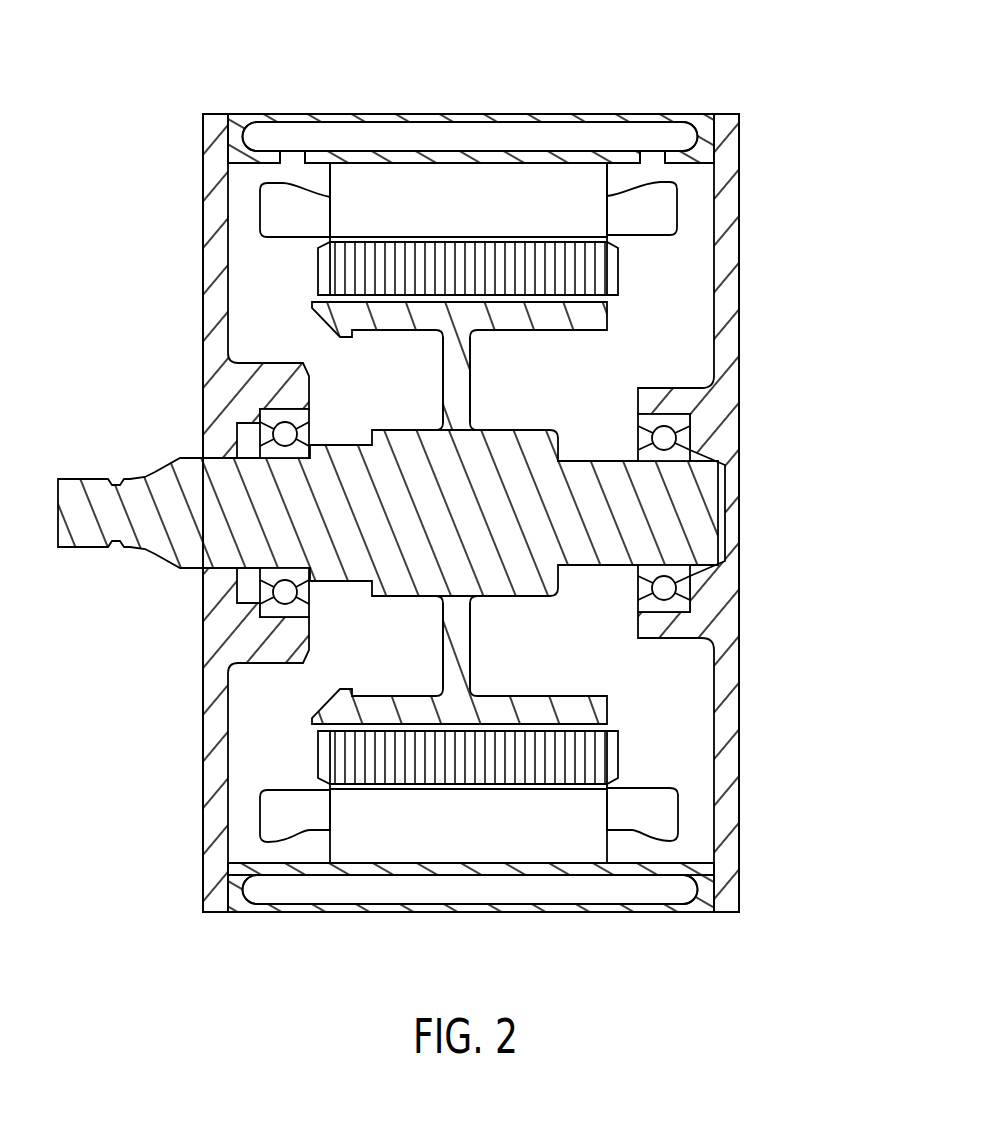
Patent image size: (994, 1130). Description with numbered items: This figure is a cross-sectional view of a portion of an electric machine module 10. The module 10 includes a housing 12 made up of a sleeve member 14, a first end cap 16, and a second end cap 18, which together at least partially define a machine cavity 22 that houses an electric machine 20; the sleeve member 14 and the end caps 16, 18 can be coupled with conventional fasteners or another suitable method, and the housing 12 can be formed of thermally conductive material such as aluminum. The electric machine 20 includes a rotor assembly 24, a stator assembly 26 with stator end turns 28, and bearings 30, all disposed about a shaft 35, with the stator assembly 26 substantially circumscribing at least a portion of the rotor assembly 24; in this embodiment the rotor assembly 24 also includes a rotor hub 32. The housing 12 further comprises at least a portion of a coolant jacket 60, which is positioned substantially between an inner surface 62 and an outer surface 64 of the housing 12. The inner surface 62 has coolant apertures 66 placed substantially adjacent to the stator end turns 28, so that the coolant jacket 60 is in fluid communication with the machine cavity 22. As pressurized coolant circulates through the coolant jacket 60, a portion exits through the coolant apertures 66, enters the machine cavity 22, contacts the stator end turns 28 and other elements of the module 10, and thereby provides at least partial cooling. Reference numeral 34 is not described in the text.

The electric machine module 10 is at (725, 40).
The housing 12 is at (250, 113).
The sleeve member 14 is at (442, 113).
The first end cap 16 is at (730, 127).
The second end cap 18 is at (203, 157).
The electric machine 20 is at (303, 283).
The machine cavity 22 is at (265, 262).
The rotor assembly 24 is at (595, 273).
The stator assembly 26 is at (375, 195).
The stator end turns 28 is at (680, 208).
The bearings 30 is at (286, 432).
The rotor hub 32 is at (452, 378).
The stator 34 is at (347, 222).
The shaft 35 is at (84, 538).
The coolant jacket 60 is at (478, 136).
The inner surface 62 is at (700, 165).
The outer surface 64 is at (570, 112).
The coolant apertures 66 is at (292, 150).